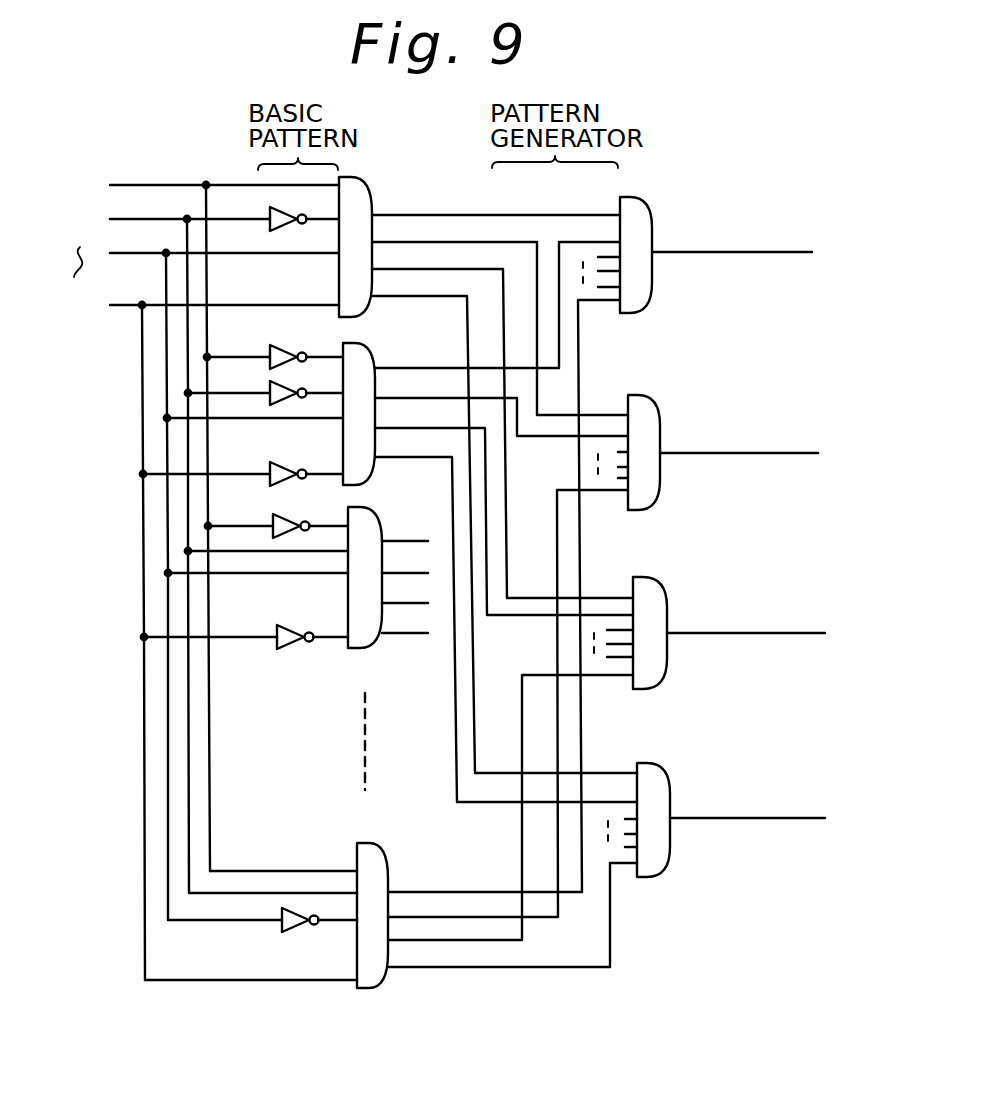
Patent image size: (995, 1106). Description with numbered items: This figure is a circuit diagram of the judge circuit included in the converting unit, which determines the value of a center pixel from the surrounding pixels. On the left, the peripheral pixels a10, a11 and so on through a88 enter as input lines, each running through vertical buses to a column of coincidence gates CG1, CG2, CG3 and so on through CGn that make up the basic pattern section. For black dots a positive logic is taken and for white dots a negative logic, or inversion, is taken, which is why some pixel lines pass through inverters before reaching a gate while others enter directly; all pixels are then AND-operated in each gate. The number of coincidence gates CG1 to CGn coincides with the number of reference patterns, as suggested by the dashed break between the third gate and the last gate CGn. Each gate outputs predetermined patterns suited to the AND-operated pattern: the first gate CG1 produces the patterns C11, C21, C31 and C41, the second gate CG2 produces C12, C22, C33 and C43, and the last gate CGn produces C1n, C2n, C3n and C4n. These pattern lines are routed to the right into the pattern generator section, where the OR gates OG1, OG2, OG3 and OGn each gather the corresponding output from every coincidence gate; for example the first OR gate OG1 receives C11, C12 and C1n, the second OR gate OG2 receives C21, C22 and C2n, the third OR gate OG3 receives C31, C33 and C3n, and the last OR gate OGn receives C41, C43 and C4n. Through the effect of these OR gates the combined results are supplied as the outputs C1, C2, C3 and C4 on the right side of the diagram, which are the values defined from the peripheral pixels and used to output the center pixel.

The peripheral pixel a10 is at (200, 522).
The peripheral pixel a11 is at (198, 549).
The peripheral pixel a88 is at (195, 635).
The coincidence gate CG1 is at (375, 188).
The coincidence gate CG2 is at (373, 344).
The coincidence gate CG3 is at (376, 508).
The coincidence gate CGn is at (381, 852).
The predetermined pattern output C11 is at (496, 205).
The predetermined pattern output C21 is at (500, 317).
The predetermined pattern output C31 is at (502, 422).
The predetermined pattern output C41 is at (504, 523).
The predetermined pattern output C12 is at (497, 305).
The predetermined pattern output C22 is at (501, 405).
The predetermined pattern output C33 is at (504, 509).
The predetermined pattern output C43 is at (506, 617).
The predetermined pattern output C1n is at (504, 596).
The predetermined pattern output C2n is at (508, 704).
The predetermined pattern output C3n is at (510, 808).
The predetermined pattern output C4n is at (512, 915).
The OR gate OG1 is at (645, 290).
The OR gate OG2 is at (653, 490).
The OR gate OG3 is at (659, 672).
The OR gate OGn is at (662, 863).
The output C1 is at (749, 251).
The output C2 is at (756, 453).
The output C3 is at (763, 634).
The output C4 is at (764, 819).